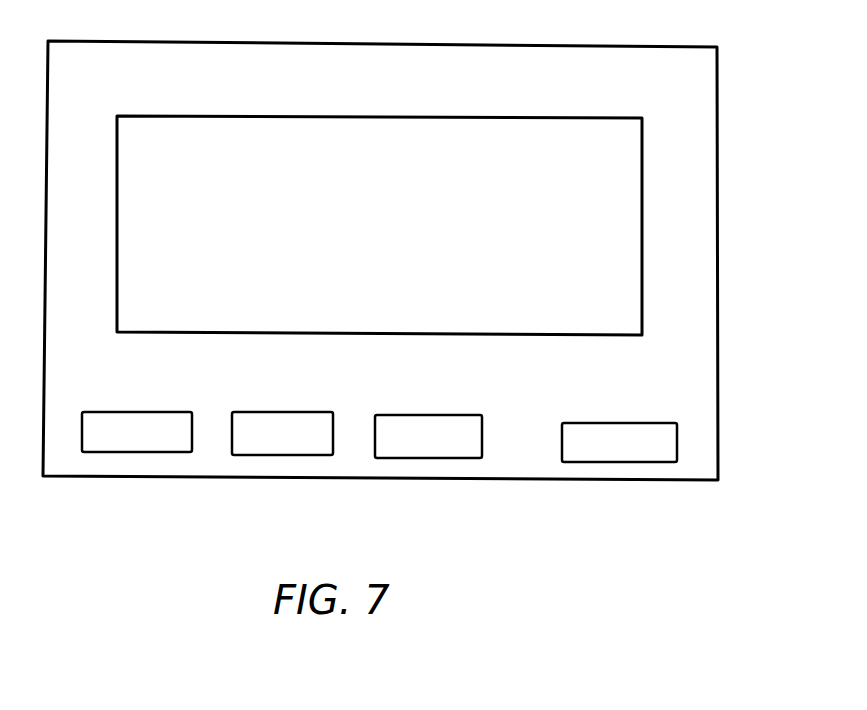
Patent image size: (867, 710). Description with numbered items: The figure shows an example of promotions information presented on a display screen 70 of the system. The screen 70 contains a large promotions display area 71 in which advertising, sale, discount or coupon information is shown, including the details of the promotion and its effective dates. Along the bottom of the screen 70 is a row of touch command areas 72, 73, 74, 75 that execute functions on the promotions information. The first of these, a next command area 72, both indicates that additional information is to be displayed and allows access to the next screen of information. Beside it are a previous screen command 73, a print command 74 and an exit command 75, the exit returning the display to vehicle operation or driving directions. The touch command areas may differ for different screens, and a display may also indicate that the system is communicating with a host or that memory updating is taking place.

The screen 70 is at (645, 39).
The promotions display area 71 is at (537, 112).
The touch command area for next screen 72 is at (123, 400).
The previous screen command 73 is at (267, 405).
The print command 74 is at (413, 410).
The exit command 75 is at (602, 420).